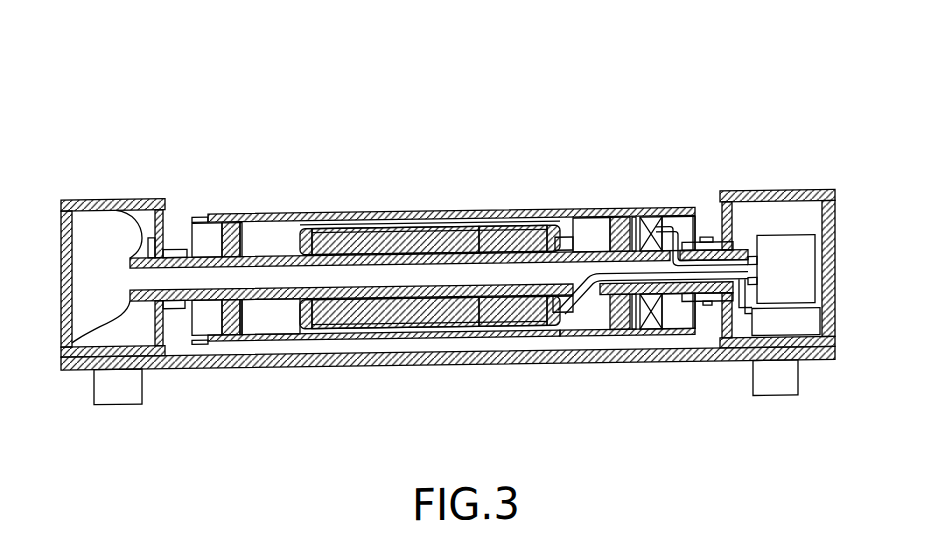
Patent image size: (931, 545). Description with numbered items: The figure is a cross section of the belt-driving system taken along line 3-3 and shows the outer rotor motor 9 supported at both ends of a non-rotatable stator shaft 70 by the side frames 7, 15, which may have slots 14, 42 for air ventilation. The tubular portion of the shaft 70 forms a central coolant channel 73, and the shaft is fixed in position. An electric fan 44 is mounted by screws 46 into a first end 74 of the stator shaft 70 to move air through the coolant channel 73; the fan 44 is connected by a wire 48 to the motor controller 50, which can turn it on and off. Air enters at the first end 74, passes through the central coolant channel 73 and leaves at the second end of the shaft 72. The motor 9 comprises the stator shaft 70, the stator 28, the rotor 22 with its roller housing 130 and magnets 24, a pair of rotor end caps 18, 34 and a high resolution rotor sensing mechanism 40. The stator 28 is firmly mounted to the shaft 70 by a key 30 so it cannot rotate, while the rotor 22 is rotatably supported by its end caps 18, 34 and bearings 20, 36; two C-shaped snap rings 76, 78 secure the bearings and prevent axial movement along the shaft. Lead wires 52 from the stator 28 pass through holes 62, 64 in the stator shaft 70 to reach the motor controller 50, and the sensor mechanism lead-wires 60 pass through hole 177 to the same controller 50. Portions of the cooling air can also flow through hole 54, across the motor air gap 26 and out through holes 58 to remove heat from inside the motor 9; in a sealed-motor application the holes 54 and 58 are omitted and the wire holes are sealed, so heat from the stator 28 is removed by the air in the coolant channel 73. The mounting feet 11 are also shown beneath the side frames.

The outer rotor motor 9 is at (442, 104).
The side frame 7 is at (68, 203).
The stator shaft 70 is at (142, 254).
The second end of the shaft 72 is at (100, 338).
The slot 14 is at (157, 214).
The line 3- 3 is at (205, 220).
The rotor 22 is at (331, 226).
The C-shaped snap ring 78 is at (598, 344).
The hole 177 is at (660, 240).
The rotor end cap 18 is at (231, 240).
The bearing 20 is at (259, 252).
The C-shaped snap ring 76 is at (253, 326).
The central coolant channel 73 is at (341, 285).
The magnets 24 is at (366, 244).
The motor air gap 26 is at (401, 244).
The stator 28 is at (453, 245).
The key 30 is at (483, 236).
The holes 58 is at (301, 242).
The roller housing 130 is at (546, 225).
The hole 54 is at (568, 247).
The rotor end cap 34 is at (582, 235).
The bearing 36 is at (614, 238).
The rotor sensing mechanism 40 is at (628, 232).
The slot 42 is at (698, 236).
The sensor mechanism lead-wires 60 is at (680, 252).
The lead wires 52 is at (576, 318).
The hole 64 is at (592, 300).
The first end of the stator shaft 74 is at (735, 252).
The side frame 15 is at (824, 205).
The wire 48 is at (837, 303).
The hole 62 is at (727, 352).
The electric fan 44 is at (787, 248).
The screws 46 is at (757, 291).
The motor controller 50 is at (770, 346).
The mounting feet 11 is at (121, 407).